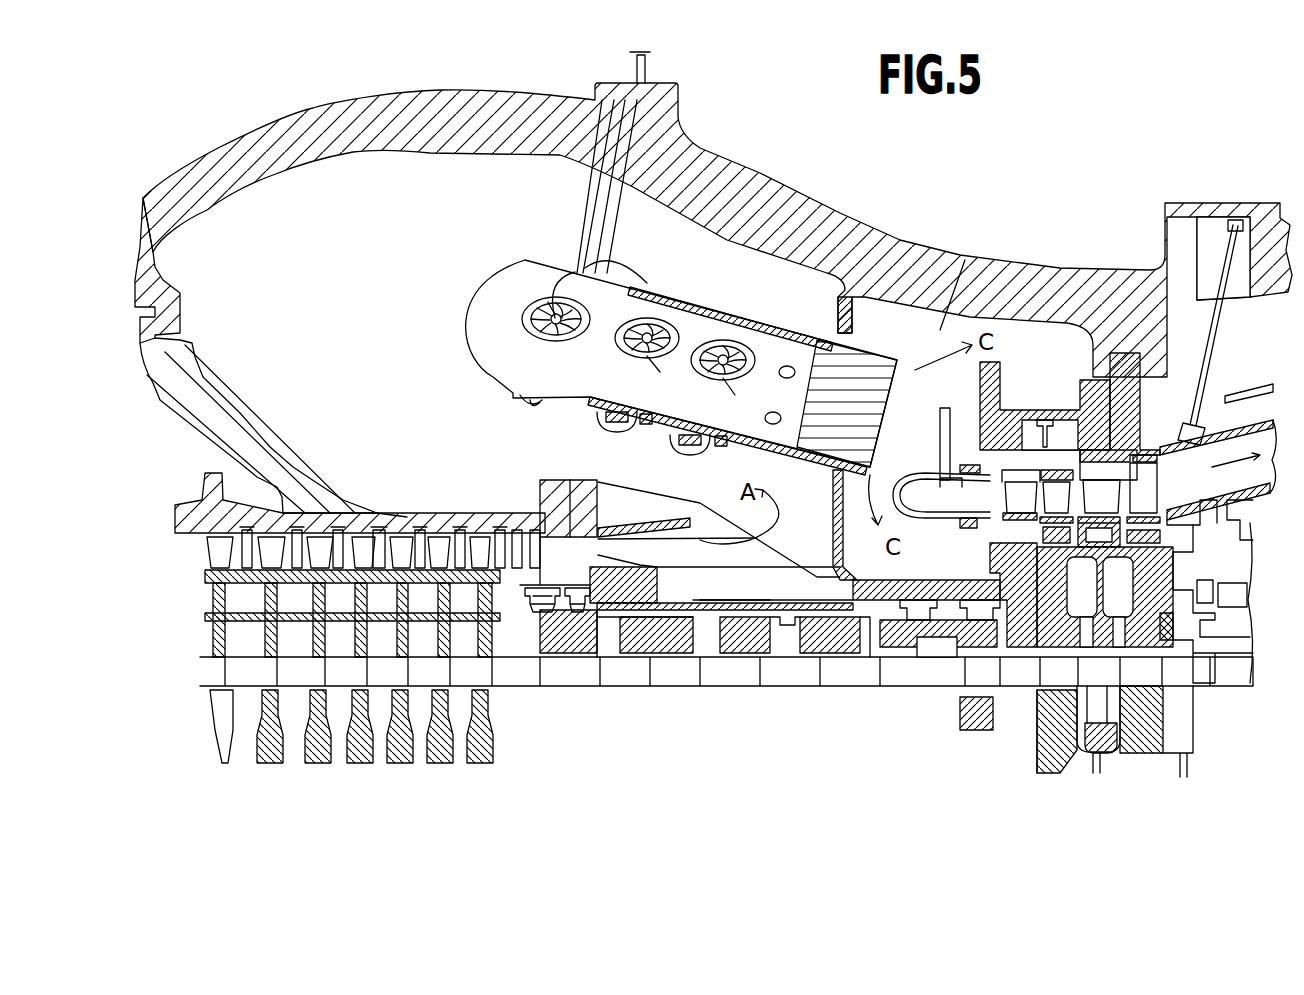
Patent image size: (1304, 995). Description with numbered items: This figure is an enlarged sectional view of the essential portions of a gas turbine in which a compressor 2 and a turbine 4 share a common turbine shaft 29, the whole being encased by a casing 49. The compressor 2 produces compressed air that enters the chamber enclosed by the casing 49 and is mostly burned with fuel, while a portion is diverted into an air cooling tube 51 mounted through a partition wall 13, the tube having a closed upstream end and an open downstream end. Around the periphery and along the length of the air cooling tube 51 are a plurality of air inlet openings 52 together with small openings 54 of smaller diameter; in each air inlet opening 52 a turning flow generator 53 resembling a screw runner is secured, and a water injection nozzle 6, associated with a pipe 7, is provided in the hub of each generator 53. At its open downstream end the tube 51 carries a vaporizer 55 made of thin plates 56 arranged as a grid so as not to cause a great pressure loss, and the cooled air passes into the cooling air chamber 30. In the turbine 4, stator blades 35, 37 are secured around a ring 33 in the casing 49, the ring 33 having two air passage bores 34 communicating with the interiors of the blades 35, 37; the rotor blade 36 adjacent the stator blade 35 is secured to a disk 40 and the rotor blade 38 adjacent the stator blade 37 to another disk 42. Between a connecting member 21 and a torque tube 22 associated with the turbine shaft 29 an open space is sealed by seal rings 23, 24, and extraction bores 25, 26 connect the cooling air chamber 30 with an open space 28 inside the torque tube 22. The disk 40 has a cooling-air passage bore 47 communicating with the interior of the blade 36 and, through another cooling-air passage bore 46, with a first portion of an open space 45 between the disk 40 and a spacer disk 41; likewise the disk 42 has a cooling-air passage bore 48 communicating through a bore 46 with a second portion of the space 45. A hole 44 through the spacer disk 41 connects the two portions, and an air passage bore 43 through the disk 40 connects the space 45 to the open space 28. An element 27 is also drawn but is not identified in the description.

The compressor 2 is at (478, 762).
The turbine 4 is at (1105, 786).
The water injection nozzle 6 is at (696, 385).
The pipe 7 is at (652, 68).
The partition wall 13 is at (855, 325).
The connecting member 21 is at (700, 618).
The torque tube 22 is at (730, 617).
The seal ring 23 is at (585, 612).
The seal ring 24 is at (880, 630).
The extraction bore 25 is at (840, 612).
The extraction bore 26 is at (868, 650).
The ring 27 is at (785, 625).
The open space 28 is at (877, 705).
The turbine shaft 29 is at (728, 603).
The cooling air chamber 30 is at (964, 274).
The ring 33 is at (1110, 400).
The air passage bore 34 is at (1040, 410).
The stator blade 35 is at (1028, 506).
The rotor blade 36 is at (1068, 506).
The stator blade 37 is at (1113, 506).
The rotor blade 38 is at (1154, 506).
The disk 40 is at (1052, 765).
The spacer disk 41 is at (1095, 760).
The disk 42 is at (1190, 760).
The air passage bore 43 is at (1057, 693).
The hole 44 is at (1103, 690).
The open space 45 is at (1137, 740).
The cooling-air passage bore 46 is at (1040, 673).
The cooling-air passage bore 47 is at (1082, 565).
The cooling-air passage bore 48 is at (1122, 560).
The casing 49 is at (340, 102).
The air cooling tube 51 is at (672, 300).
The air inlet opening 52 is at (545, 305).
The turning flow generator 53 is at (552, 295).
The small opening 54 is at (787, 364).
The vaporizer 55 is at (897, 422).
The thin plate 56 is at (840, 462).